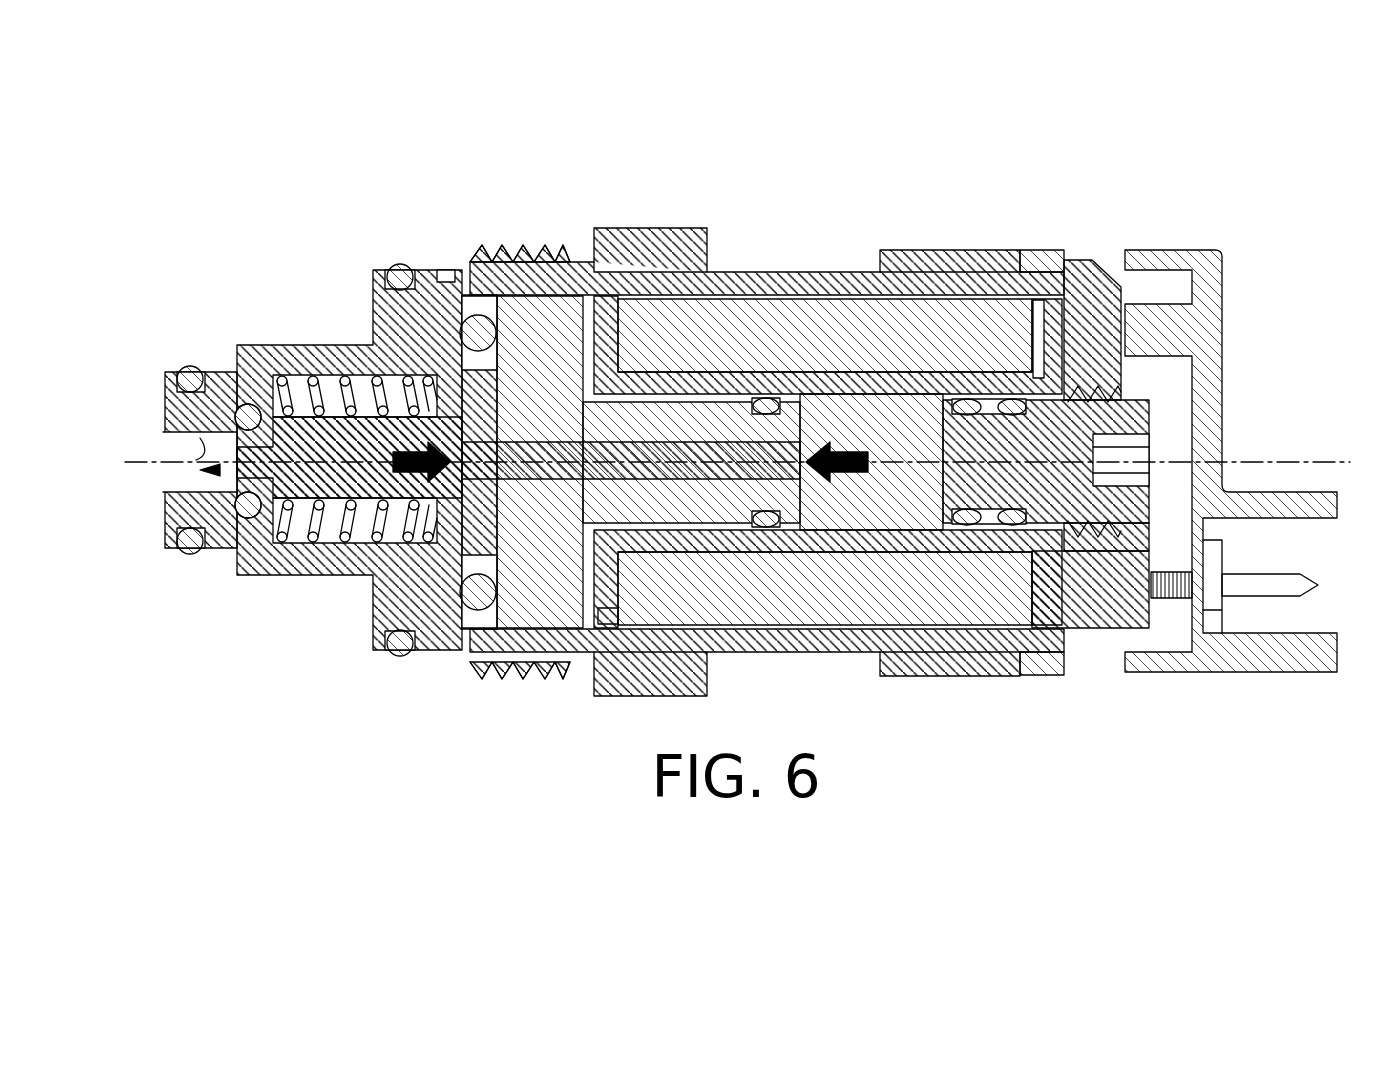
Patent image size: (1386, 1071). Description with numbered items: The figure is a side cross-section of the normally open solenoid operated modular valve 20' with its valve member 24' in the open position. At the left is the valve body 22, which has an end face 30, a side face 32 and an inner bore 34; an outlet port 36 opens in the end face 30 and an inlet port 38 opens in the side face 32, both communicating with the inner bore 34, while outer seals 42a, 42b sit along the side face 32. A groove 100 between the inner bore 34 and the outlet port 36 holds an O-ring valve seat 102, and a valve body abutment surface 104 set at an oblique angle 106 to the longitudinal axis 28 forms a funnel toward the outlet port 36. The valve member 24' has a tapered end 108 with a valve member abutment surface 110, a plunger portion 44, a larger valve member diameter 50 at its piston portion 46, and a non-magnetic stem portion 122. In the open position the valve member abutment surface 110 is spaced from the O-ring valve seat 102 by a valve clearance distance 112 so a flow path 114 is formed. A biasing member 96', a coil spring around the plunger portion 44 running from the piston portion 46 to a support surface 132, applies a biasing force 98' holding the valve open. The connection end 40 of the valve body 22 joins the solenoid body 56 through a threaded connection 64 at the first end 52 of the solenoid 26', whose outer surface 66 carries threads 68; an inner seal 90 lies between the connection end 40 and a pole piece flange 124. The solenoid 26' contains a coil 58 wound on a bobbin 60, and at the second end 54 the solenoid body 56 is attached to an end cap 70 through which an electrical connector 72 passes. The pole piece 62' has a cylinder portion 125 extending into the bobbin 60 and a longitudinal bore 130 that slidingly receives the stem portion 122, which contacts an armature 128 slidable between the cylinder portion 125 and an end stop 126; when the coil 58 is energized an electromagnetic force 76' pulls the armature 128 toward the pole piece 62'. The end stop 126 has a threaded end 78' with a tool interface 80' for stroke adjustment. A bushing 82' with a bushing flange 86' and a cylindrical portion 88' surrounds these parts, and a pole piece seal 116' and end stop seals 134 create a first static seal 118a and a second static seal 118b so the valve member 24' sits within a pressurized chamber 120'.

The normally open solenoid operated modular valve 20' is at (295, 101).
The valve body 22 is at (267, 562).
The valve member 24' is at (648, 372).
The solenoid 26' is at (976, 128).
The longitudinal axis 28 is at (1312, 462).
The end face 30 is at (155, 403).
The side face 32 is at (260, 330).
The inner bore 34 is at (376, 642).
The outlet port 36 is at (203, 447).
The inlet port 38 is at (330, 387).
The connection end 40 is at (440, 268).
The outer seal 42a is at (172, 383).
The outer seal 42b is at (400, 265).
The plunger portion 44 is at (400, 437).
The piston portion 46 is at (453, 657).
The valve member diameter 50 is at (640, 690).
The first end 52 is at (530, 140).
The second end 54 is at (1118, 218).
The solenoid body 56 is at (945, 652).
The coil 58 is at (866, 321).
The bobbin 60 is at (815, 627).
The pole piece 62' is at (828, 398).
The threaded connection 64 is at (470, 262).
The outer surface 66 is at (610, 692).
The threads 68 is at (502, 245).
The end cap 70 is at (1185, 330).
The electrical connector 72 is at (1298, 582).
The electromagnetic force 76' is at (868, 382).
The threaded end 78' is at (1106, 457).
The tool interface 80' is at (1184, 455).
The bushing 82' is at (650, 235).
The bushing flange 86' is at (575, 655).
The cylindrical portion 88' is at (759, 619).
The inner seal 90 is at (480, 605).
The biasing member 96' is at (410, 306).
The biasing force 98' is at (446, 629).
The groove 100 is at (200, 503).
The O-ring valve seat 102 is at (237, 403).
The valve body abutment surface 104 is at (227, 550).
The oblique angle 106 is at (310, 540).
The tapered end 108 is at (287, 410).
The valve member abutment surface 110 is at (263, 400).
The valve clearance distance 112 is at (230, 385).
The flow path 114 is at (228, 468).
The pole piece seal 116' is at (794, 312).
The first static seal 118a is at (775, 530).
The second static seal 118b is at (988, 525).
The pressurized chamber 120' is at (541, 700).
The stem portion 122 is at (695, 459).
The pole piece flange 124 is at (595, 310).
The cylinder portion 125 is at (711, 414).
The end stop 126 is at (1078, 540).
The armature 128 is at (891, 414).
The longitudinal bore 130 is at (530, 630).
The support surface 132 is at (240, 520).
The end stop seals 134 is at (967, 399).